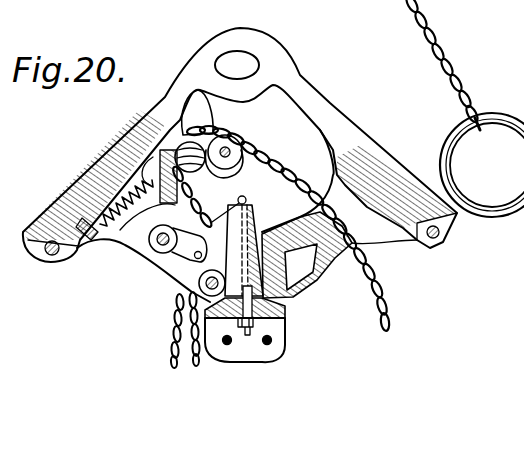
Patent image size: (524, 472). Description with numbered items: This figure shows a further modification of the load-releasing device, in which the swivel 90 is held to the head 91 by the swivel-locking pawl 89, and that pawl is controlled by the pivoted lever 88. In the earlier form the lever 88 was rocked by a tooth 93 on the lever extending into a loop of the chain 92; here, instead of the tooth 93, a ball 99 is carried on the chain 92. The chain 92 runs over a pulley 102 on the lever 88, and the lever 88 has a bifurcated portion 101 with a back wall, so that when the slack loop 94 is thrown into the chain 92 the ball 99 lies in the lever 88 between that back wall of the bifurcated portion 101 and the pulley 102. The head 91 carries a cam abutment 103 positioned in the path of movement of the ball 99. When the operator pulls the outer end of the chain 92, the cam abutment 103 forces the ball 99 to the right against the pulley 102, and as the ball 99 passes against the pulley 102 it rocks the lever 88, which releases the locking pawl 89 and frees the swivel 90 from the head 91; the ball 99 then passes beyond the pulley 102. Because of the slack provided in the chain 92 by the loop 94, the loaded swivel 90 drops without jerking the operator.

The pivoted lever 88 is at (125, 246).
The swivel-locking pawl 89 is at (183, 272).
The swivel 90 is at (285, 317).
The head 91 is at (322, 113).
The chain 92 is at (386, 286).
The tooth 93 is at (508, 113).
The loop 94 is at (172, 340).
The ball 99 is at (177, 153).
The bifurcated portion 101 is at (222, 180).
The pulley 102 is at (235, 150).
The cam abutment 103 is at (195, 108).